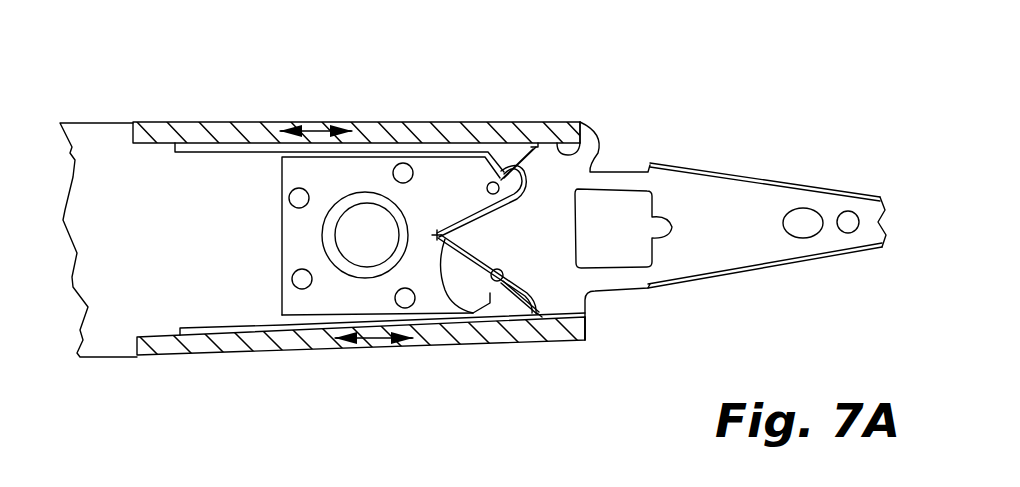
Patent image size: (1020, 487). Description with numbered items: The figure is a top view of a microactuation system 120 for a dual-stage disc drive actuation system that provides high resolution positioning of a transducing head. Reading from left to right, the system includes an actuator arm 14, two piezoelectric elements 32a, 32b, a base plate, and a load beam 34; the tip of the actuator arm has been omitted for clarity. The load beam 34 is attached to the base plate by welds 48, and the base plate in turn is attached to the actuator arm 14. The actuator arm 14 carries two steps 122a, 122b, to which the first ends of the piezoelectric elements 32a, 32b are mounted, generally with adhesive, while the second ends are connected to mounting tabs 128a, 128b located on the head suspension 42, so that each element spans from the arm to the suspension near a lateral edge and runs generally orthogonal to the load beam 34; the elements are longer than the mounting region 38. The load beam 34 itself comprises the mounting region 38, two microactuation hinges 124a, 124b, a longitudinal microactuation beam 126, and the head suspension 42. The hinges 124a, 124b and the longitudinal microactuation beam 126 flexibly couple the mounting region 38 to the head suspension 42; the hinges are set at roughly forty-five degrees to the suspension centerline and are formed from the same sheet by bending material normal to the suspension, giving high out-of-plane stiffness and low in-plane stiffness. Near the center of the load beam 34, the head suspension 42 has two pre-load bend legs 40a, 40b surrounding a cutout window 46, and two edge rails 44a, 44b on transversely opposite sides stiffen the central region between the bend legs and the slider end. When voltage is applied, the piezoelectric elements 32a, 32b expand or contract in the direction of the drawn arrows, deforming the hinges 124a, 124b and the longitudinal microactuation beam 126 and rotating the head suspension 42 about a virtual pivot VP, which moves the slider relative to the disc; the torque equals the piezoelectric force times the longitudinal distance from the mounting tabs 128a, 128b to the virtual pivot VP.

The microactuation system 120 is at (241, 44).
The actuator arm 14 is at (88, 135).
The step 122a is at (134, 153).
The step 122b is at (164, 322).
The piezoelectric element 32a is at (262, 136).
The piezoelectric element 32b is at (207, 342).
The mounting region 38 is at (376, 172).
The welds 48 is at (290, 195).
The microactuation hinge 124a is at (480, 121).
The microactuation hinge 124b is at (540, 340).
The longitudinal microactuation beam 126 is at (477, 343).
The mounting tab 128a is at (580, 122).
The mounting tab 128b is at (587, 327).
The virtual pivot VP is at (436, 237).
The load beam 34 is at (731, 184).
The pre-load bend leg 40a is at (596, 172).
The pre-load bend leg 40b is at (590, 276).
The cutout window 46 is at (618, 205).
The head suspension 42 is at (767, 217).
The edge rail 44a is at (810, 183).
The edge rail 44b is at (803, 262).